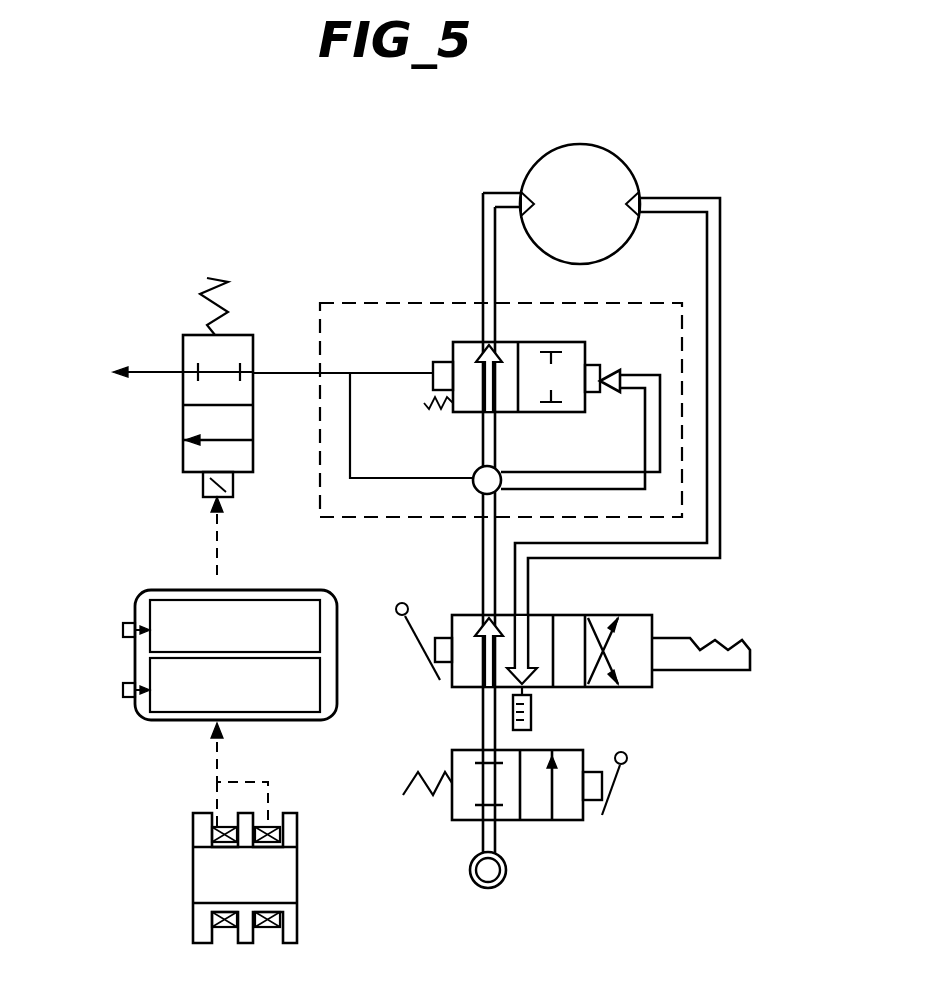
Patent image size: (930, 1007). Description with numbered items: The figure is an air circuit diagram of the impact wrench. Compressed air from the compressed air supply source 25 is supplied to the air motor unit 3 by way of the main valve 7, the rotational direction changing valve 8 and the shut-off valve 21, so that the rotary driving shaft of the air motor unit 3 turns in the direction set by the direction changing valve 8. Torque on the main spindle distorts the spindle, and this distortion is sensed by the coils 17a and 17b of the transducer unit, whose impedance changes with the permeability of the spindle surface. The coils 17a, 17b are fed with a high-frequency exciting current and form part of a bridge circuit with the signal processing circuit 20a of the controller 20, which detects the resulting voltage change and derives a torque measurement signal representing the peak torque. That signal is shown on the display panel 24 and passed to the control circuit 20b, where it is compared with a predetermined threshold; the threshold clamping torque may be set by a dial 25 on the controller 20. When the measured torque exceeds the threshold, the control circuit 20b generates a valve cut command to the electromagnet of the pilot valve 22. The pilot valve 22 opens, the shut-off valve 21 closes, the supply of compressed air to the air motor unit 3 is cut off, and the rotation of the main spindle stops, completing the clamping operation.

The air motor unit 3 is at (610, 151).
The main valve 7 is at (540, 750).
The rotational direction changing valve 8 is at (540, 615).
The coil 17a is at (212, 835).
The coil 17b is at (280, 835).
The controller 20 is at (230, 658).
The signal processing circuit 20a is at (285, 720).
The control circuit 20b is at (284, 600).
The shut-off valve 21 is at (465, 342).
The pilot valve 22 is at (183, 352).
The display panel 24 is at (123, 690).
The compressed air supply source 25 is at (123, 630).